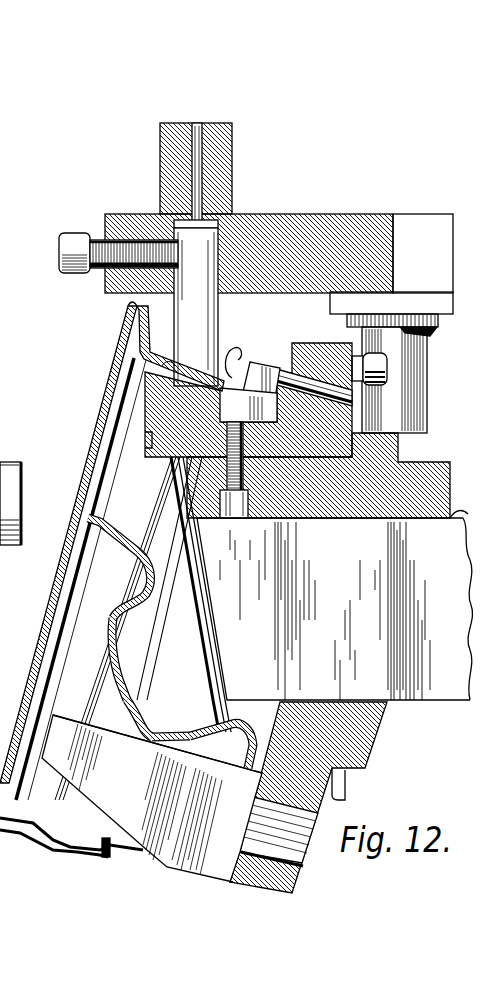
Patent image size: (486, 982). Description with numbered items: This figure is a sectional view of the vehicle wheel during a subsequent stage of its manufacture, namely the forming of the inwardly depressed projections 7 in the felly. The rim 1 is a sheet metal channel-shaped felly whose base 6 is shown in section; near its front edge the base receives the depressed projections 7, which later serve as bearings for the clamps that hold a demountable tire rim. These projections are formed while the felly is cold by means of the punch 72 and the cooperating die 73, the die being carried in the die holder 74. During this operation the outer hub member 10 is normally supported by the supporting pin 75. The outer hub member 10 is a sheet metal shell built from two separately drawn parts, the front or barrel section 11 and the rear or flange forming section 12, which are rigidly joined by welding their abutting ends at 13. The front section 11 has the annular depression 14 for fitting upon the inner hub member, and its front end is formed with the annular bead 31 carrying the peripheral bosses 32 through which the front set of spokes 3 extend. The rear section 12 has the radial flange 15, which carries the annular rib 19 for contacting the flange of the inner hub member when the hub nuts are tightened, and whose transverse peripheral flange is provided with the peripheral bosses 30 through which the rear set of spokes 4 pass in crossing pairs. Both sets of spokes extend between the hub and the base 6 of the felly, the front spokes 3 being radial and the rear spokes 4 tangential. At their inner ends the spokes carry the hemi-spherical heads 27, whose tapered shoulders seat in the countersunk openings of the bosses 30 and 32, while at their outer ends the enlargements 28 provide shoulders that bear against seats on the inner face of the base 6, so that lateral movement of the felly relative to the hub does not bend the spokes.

The rim 1 is at (128, 337).
The enlargements 28 is at (112, 360).
The base of the felly 6 is at (145, 390).
The inwardly depressed projections 7 is at (148, 405).
The die holder 74 is at (147, 440).
The rear set of spokes 4 is at (150, 503).
The punch 72 is at (249, 254).
The die 73 is at (268, 360).
The peripheral bosses 30 is at (110, 553).
The annular rib 19 is at (110, 607).
The radial flange 15 is at (118, 628).
The front set of spokes 3 is at (200, 625).
The rear or flange forming section 12 is at (130, 688).
The welded abutting ends 13 is at (150, 697).
The front or barrel section 11 is at (163, 738).
The hemi-spherical heads 27 is at (220, 748).
The outer hub member 10 is at (250, 720).
The peripheral bosses 32 is at (228, 720).
The annular bead 31 is at (308, 797).
The annular depression 14 is at (176, 747).
The supporting pin 75 is at (152, 798).